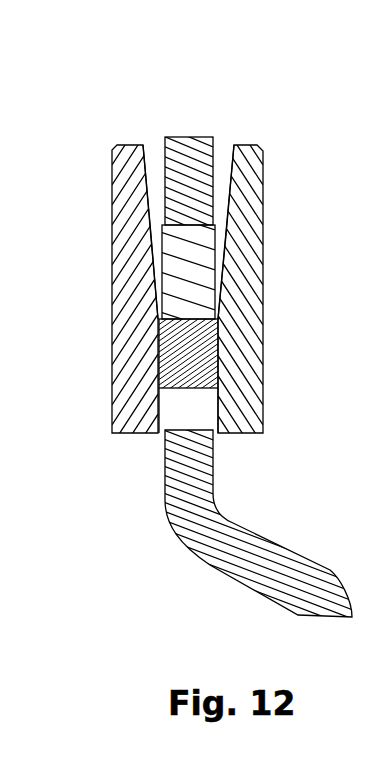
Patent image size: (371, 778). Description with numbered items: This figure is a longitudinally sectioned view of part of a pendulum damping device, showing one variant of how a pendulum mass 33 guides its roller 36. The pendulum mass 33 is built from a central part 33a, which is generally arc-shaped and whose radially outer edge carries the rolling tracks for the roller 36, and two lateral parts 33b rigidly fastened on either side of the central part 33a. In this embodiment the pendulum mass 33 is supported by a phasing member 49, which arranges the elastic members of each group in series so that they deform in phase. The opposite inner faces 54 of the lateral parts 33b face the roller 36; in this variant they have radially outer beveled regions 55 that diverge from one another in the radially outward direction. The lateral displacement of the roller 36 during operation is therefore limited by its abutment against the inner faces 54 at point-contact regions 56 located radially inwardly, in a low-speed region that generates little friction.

The pendulum mass 33 is at (195, 293).
The central part 33a is at (203, 352).
The lateral part 33b is at (242, 313).
The roller 36 is at (192, 265).
The phasing member 49 is at (250, 558).
The inner face 54 is at (174, 405).
The radially outer beveled region 55 is at (143, 167).
The point-contact region 56 is at (159, 321).